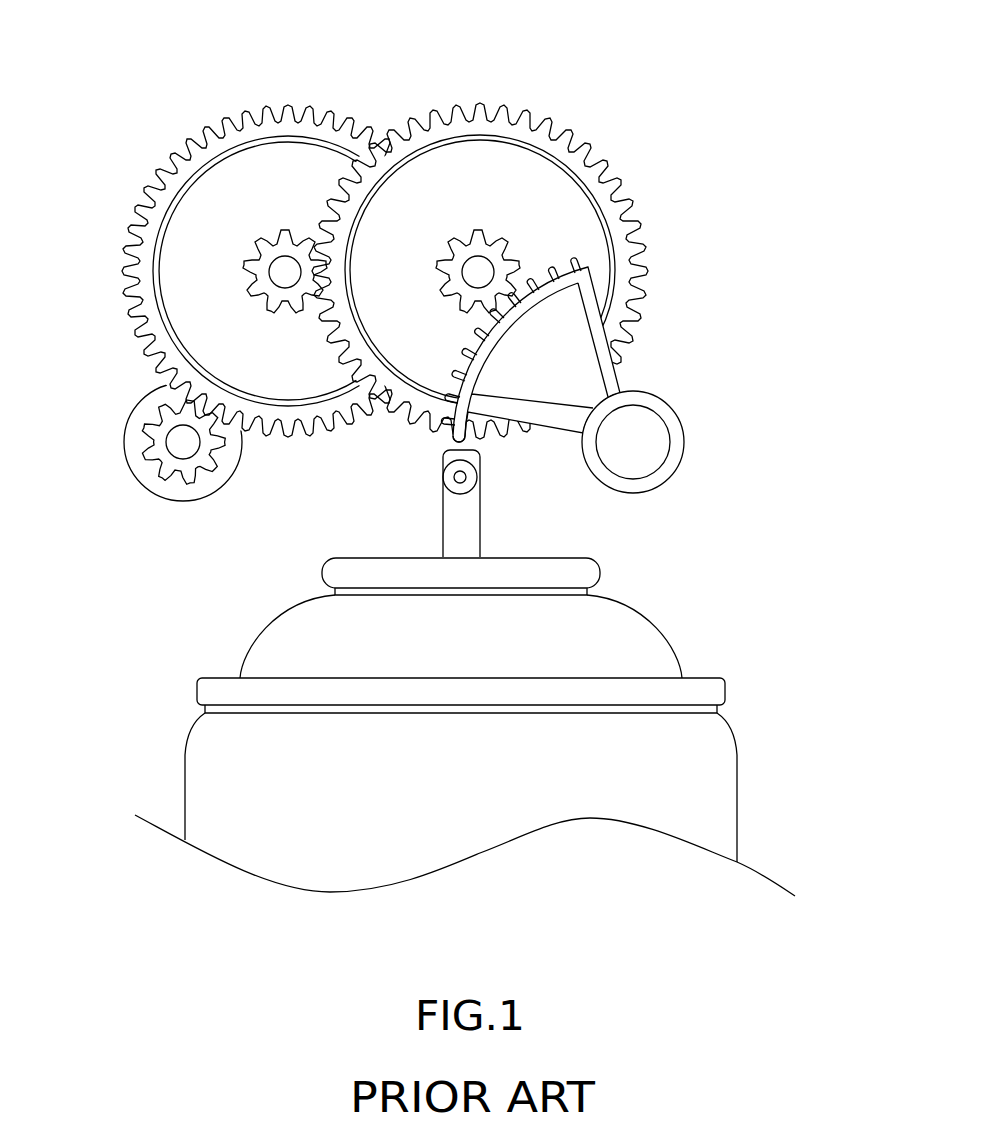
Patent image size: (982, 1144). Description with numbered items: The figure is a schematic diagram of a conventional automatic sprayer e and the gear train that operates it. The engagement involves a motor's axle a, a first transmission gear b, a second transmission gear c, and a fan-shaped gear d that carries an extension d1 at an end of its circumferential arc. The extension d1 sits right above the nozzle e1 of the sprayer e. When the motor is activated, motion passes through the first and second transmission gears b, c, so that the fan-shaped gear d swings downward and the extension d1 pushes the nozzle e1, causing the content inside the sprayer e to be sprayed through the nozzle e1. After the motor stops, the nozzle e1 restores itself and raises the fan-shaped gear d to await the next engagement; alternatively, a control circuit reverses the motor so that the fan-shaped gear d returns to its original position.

The motor's axle a is at (183, 443).
The first transmission gear b is at (268, 175).
The second transmission gear c is at (502, 178).
The fan-shaped gear d is at (562, 322).
The extension d1 is at (452, 442).
The automatic sprayer e is at (226, 772).
The nozzle e1 is at (458, 520).